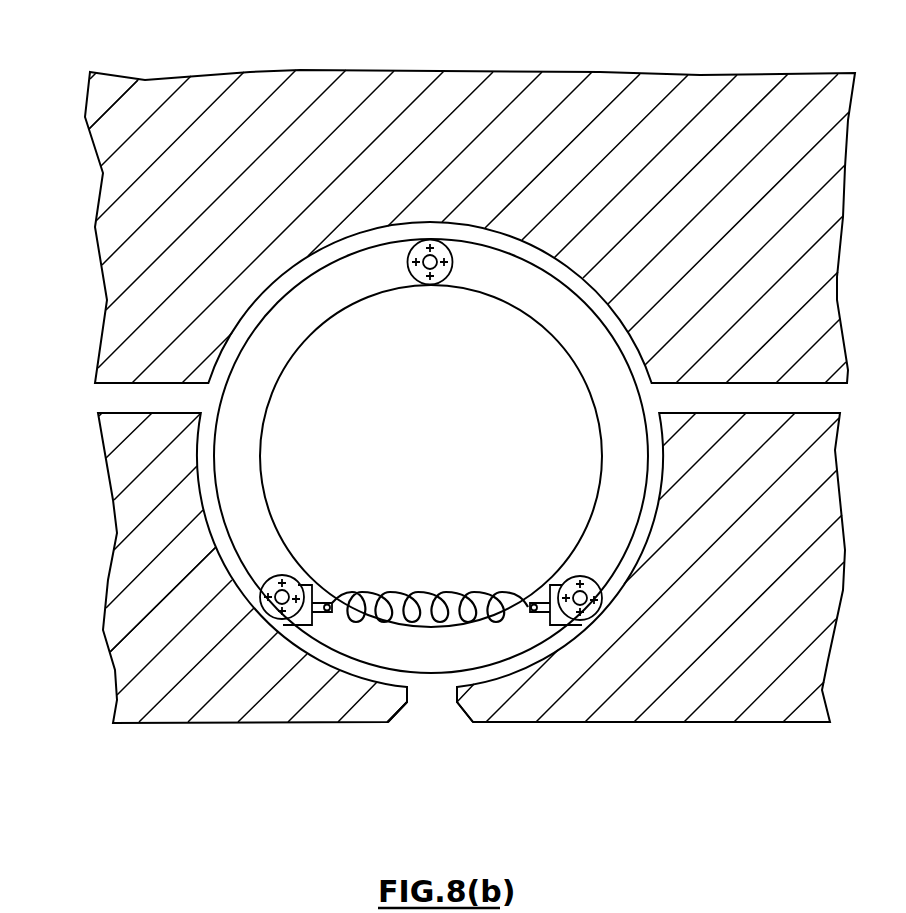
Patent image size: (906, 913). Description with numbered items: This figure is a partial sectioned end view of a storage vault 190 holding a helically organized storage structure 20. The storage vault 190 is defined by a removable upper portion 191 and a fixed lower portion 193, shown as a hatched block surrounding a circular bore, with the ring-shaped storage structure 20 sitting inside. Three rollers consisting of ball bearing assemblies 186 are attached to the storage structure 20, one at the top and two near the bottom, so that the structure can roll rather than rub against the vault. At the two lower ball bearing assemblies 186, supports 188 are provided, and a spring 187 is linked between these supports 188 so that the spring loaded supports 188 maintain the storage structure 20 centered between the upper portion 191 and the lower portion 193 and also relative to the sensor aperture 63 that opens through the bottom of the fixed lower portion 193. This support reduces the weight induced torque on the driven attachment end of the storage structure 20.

The storage vault 190 is at (84, 97).
The removable upper portion 191 is at (125, 233).
The fixed lower portion 193 is at (135, 667).
The storage structure 20 is at (247, 482).
The ball bearing assemblies 186 is at (400, 253).
The spring 187 is at (378, 623).
The supports 188 is at (293, 626).
The sensor aperture 63 is at (447, 708).